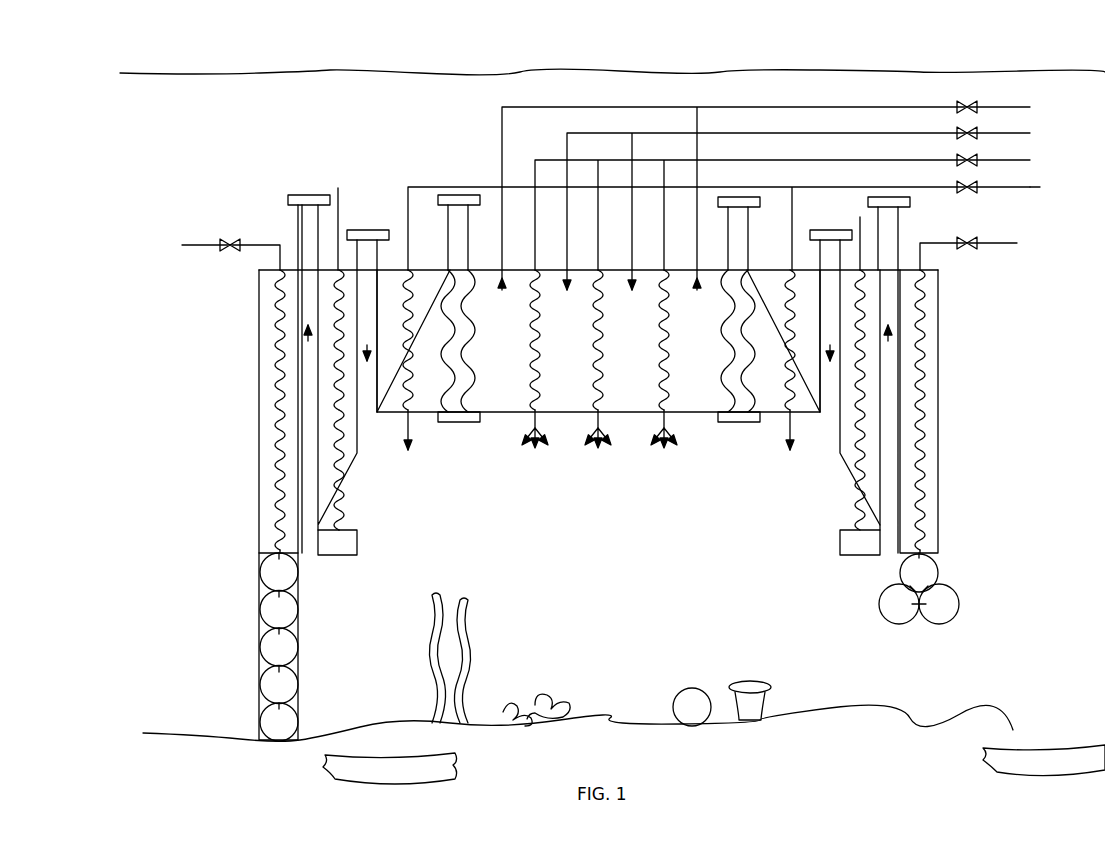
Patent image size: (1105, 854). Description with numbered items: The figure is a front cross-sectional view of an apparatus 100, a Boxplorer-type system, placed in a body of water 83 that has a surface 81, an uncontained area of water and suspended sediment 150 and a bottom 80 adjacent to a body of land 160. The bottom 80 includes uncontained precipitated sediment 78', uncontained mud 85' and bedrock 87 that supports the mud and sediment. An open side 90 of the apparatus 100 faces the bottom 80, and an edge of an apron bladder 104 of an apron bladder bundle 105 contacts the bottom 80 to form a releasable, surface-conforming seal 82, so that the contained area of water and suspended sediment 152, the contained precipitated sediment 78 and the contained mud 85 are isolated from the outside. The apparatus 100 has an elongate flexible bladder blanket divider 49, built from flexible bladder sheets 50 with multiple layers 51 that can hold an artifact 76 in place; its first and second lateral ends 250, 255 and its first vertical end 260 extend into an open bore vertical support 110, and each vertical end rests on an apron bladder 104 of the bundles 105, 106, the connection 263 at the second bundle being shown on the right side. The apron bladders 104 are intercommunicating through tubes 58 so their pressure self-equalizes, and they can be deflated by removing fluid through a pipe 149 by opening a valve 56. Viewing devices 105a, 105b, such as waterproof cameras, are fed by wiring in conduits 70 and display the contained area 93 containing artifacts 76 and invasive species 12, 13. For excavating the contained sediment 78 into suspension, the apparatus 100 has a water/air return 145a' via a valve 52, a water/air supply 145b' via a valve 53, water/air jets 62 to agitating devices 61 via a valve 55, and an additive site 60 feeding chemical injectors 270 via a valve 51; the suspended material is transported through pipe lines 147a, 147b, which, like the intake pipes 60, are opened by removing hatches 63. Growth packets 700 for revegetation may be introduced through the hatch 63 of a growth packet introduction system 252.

The apparatus 100 is at (242, 156).
The surface 81 is at (323, 70).
The body of water 83 is at (244, 59).
The open bore vertical support 110 is at (239, 428).
The transporting pipe 147b is at (296, 350).
The transporting pipe 147a is at (900, 333).
The uncontained area of water and suspended sediment 150 is at (207, 493).
The contained area of water and suspended sediment 152 is at (613, 578).
The first vertical end 260 is at (259, 553).
The apron bladder 104 is at (259, 610).
The intercommunicating tubes 58 is at (300, 591).
The apron bladder bundle 105 is at (240, 663).
The seal 82 is at (278, 745).
The uncontained precipitated sediment 78' is at (228, 755).
The pipe 149 is at (190, 245).
The valve 56 is at (225, 252).
The first lateral end 250 is at (284, 267).
The hatch 63 is at (312, 195).
The additive site / intake pipe 60 is at (828, 353).
The conduit 70 is at (342, 506).
The viewing device 105a is at (357, 540).
The viewing device 105b is at (840, 542).
The water/air return 145a' is at (789, 193).
The water/air supply 145b' is at (822, 206).
The water/air jets 62 is at (795, 213).
The valve 52 is at (957, 105).
The valve 53 is at (980, 132).
The valve 55 is at (980, 159).
The valve / layers 51 is at (957, 187).
The second lateral end 255 is at (920, 264).
The elongate flexible bladder blanket divider 49 is at (704, 430).
The chemical injector 270 is at (412, 440).
The growth packet introduction system 252 is at (478, 325).
The bladder sheets 50 is at (567, 363).
The agitating devices 61 is at (558, 456).
The ball connection 263 is at (940, 555).
The apron bladder bundle 106 is at (962, 573).
The bottom of the body of water 80 is at (975, 715).
The uncontained mud 85' is at (146, 710).
The contained mud 85 is at (370, 697).
The contained precipitated sediment 78 is at (658, 695).
The invasive species 13 is at (432, 723).
The bedrock 87 is at (454, 754).
The invasive species 12 is at (540, 726).
The contained area 93 is at (578, 669).
The growth packet 700 is at (700, 688).
The artifact 76 is at (750, 720).
The open side 90 is at (850, 650).
The body of land 160 is at (1078, 752).